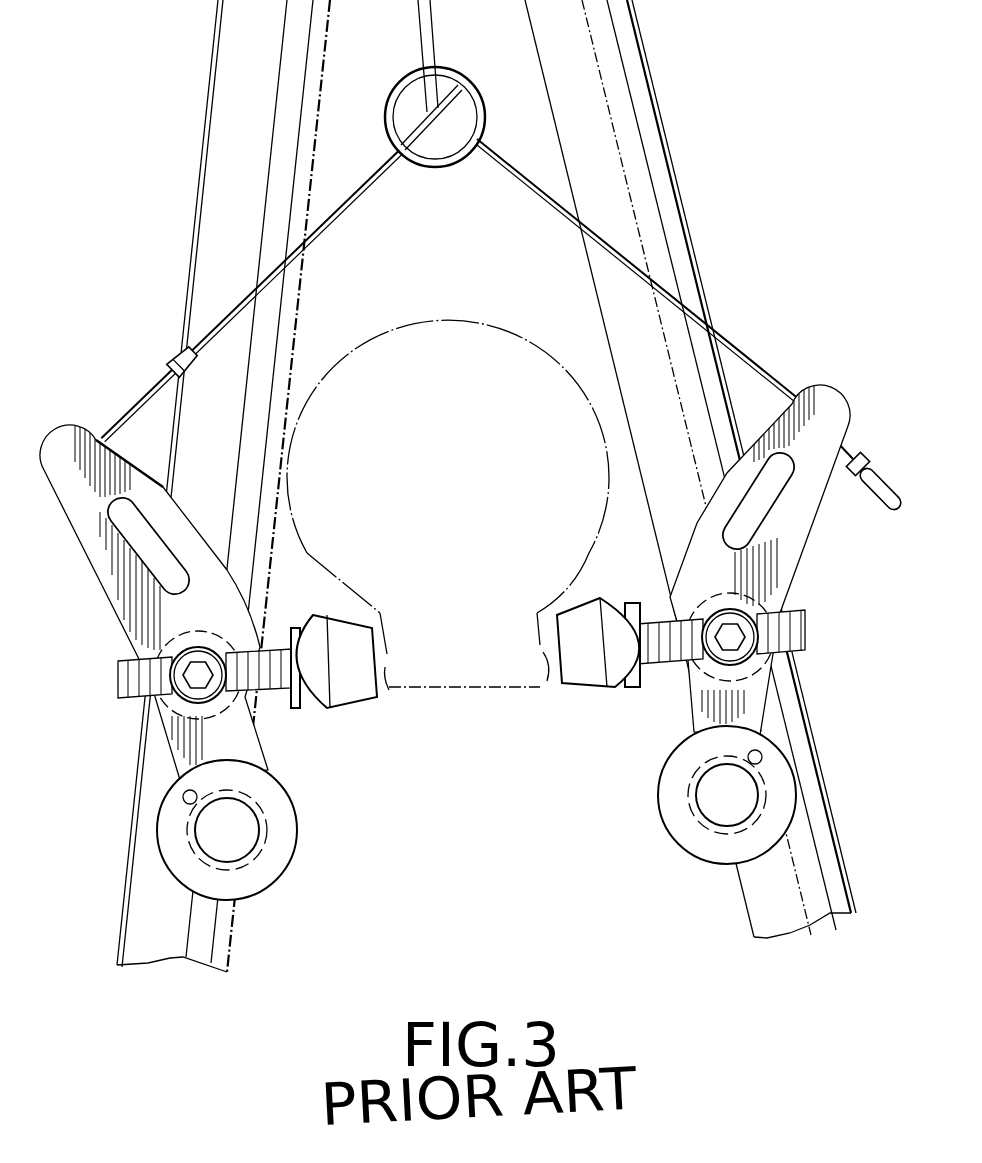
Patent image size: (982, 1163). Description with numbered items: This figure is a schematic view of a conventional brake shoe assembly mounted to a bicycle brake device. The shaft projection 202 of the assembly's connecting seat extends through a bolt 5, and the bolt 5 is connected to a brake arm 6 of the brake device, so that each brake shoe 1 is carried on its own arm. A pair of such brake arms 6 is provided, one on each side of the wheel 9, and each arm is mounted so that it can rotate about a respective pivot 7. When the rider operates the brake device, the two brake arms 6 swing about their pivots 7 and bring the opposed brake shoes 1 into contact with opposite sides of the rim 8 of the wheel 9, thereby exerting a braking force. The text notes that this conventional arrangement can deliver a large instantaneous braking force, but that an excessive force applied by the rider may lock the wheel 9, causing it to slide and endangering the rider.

The brake shoe 1 is at (364, 692).
The shaft projection 202 is at (272, 696).
The bolt 5 is at (187, 700).
The brake arm 6 is at (838, 400).
The pivot 7 is at (240, 842).
The rim 8 is at (389, 690).
The wheel 9 is at (438, 320).